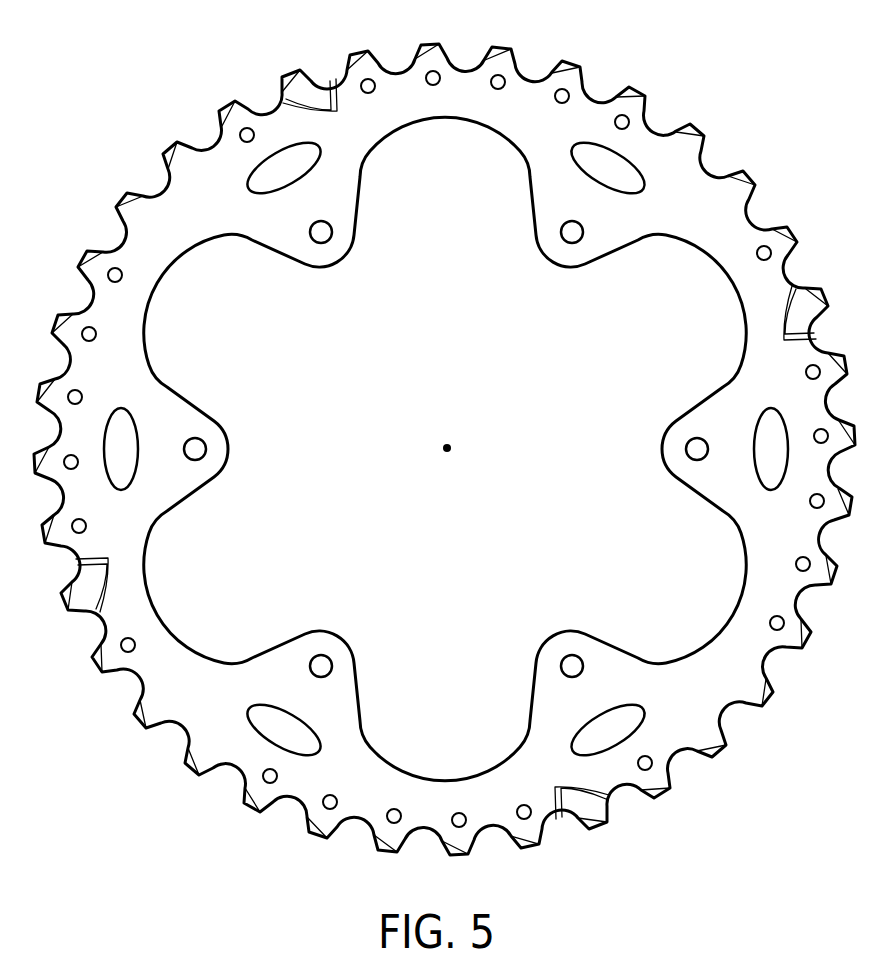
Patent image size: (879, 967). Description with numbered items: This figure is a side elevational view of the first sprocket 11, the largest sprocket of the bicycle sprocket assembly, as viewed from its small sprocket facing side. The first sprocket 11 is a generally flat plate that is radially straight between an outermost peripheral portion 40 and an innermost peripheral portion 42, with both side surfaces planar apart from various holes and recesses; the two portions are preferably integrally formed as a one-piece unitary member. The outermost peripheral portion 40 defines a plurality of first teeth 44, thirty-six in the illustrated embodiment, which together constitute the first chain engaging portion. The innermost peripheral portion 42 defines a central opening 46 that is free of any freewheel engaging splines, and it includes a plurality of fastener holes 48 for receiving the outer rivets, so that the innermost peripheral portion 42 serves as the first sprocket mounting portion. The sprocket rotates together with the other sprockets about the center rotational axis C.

The first sprocket 11 is at (444, 434).
The outermost peripheral portion 40 is at (663, 157).
The innermost peripheral portion 42 is at (607, 235).
The first teeth 44 is at (573, 67).
The opening 46 is at (687, 268).
The fastener holes 48 is at (330, 242).
The center rotational axis C is at (452, 443).